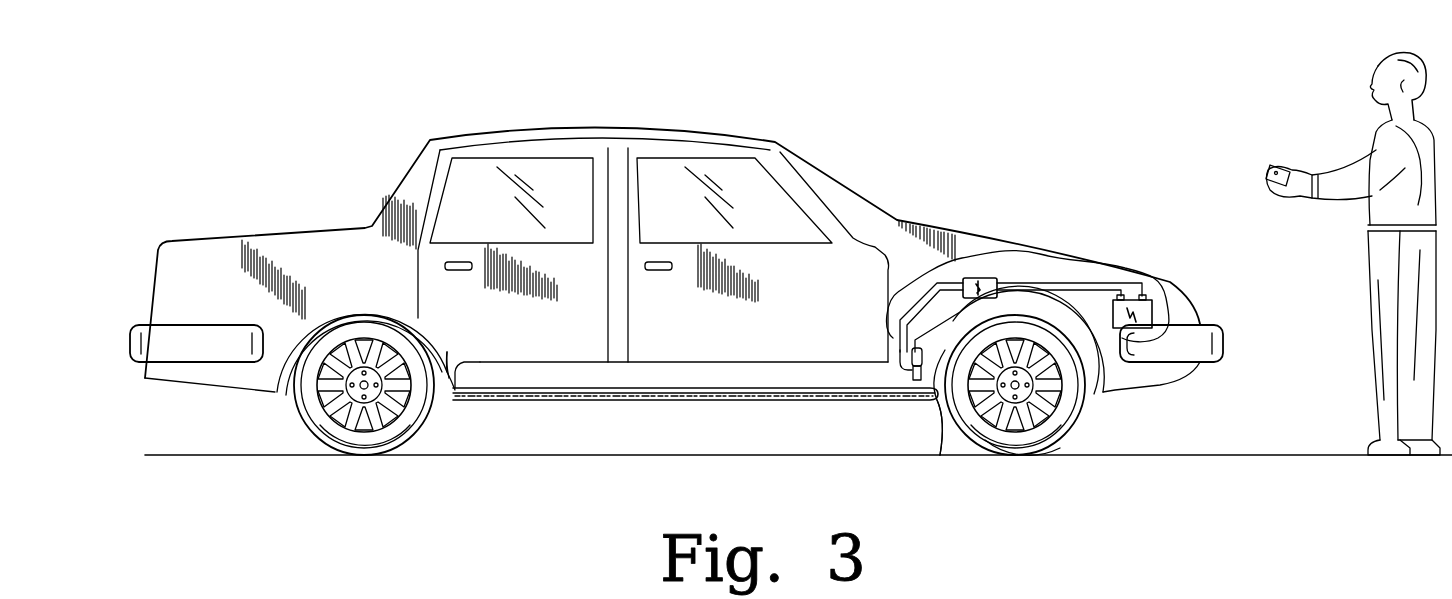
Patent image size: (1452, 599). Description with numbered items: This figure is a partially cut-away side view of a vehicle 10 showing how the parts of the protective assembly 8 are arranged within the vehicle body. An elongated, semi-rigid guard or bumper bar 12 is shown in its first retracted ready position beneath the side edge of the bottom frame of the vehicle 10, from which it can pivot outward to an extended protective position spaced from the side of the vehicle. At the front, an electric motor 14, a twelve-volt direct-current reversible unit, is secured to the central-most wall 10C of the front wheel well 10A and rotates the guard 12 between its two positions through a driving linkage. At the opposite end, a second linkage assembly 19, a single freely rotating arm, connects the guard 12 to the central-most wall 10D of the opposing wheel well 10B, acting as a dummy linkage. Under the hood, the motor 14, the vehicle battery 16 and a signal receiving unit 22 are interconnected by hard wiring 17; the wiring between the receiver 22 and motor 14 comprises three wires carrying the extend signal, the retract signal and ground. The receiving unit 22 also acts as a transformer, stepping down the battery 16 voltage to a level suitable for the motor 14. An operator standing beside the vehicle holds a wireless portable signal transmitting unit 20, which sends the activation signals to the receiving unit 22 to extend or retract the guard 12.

The protective assembly 8 is at (1054, 481).
The vehicle 10 is at (203, 182).
The front wheel well 10A is at (942, 426).
The opposing wheel well 10B is at (284, 378).
The central-most wall of the front wheel well 10C is at (935, 396).
The central-most wall of the opposing wheel well 10D is at (447, 362).
The guard or bumper bar 12 is at (618, 404).
The electric motor 14 is at (904, 378).
The vehicle battery 16 is at (1150, 312).
The hard wiring 17 is at (912, 296).
The second linkage assembly 19 is at (465, 372).
The wireless portable signal transmitting unit 20 is at (1270, 168).
The signal receiving unit 22 is at (984, 285).